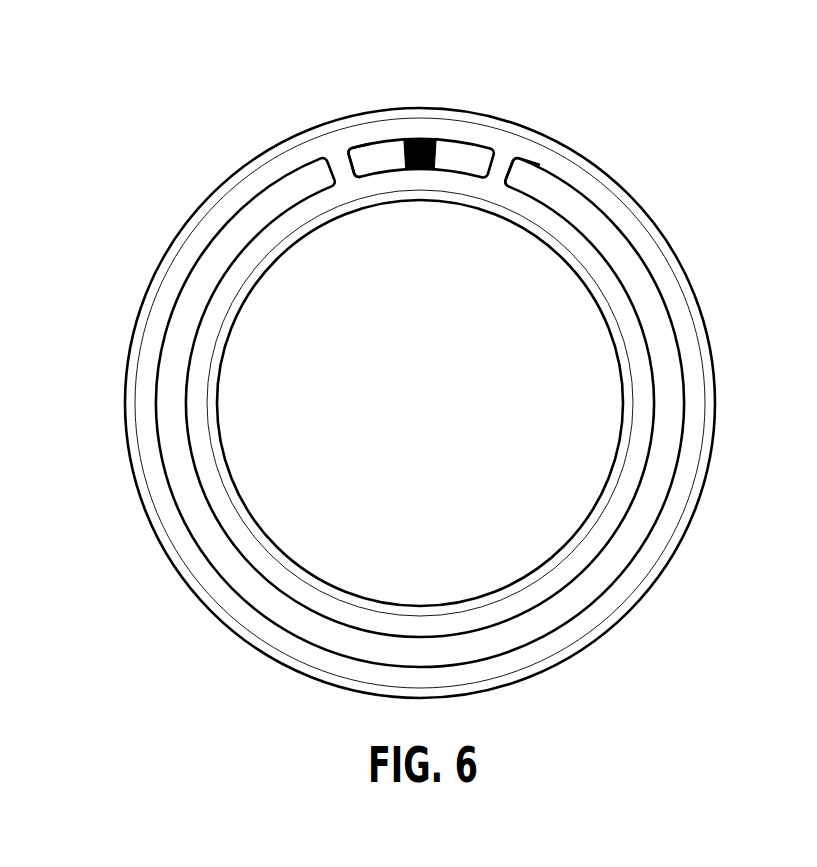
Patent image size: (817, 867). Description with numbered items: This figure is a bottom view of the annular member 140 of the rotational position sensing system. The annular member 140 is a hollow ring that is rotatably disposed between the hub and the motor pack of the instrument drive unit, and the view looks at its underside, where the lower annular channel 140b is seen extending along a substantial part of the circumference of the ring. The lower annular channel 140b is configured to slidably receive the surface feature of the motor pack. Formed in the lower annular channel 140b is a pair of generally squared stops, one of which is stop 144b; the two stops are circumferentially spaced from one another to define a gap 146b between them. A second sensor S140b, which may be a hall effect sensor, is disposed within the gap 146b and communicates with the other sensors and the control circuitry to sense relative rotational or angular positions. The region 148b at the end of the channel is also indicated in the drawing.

The annular member 140 is at (717, 223).
The lower annular channel 140b is at (565, 208).
The stop 144b is at (368, 151).
The gap 146b is at (458, 162).
The slot end 148b is at (532, 169).
The second sensor S140b is at (415, 140).